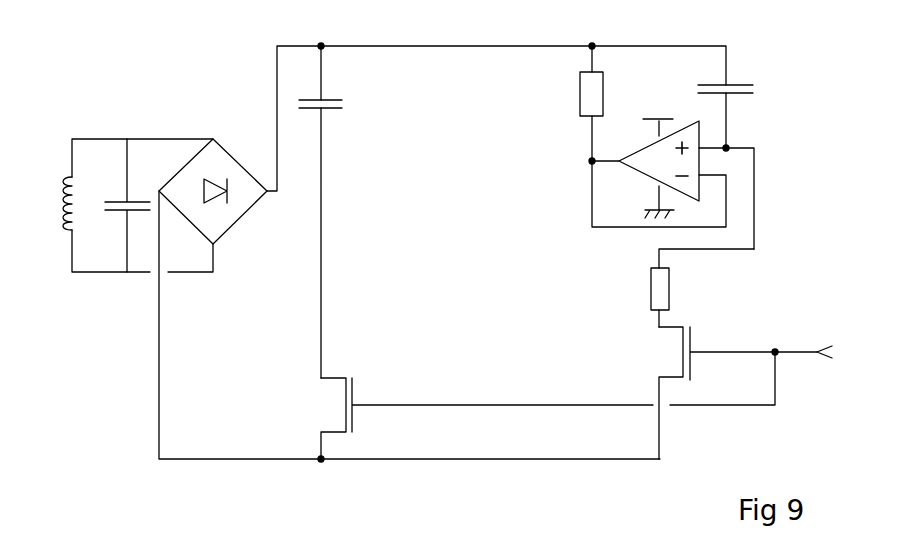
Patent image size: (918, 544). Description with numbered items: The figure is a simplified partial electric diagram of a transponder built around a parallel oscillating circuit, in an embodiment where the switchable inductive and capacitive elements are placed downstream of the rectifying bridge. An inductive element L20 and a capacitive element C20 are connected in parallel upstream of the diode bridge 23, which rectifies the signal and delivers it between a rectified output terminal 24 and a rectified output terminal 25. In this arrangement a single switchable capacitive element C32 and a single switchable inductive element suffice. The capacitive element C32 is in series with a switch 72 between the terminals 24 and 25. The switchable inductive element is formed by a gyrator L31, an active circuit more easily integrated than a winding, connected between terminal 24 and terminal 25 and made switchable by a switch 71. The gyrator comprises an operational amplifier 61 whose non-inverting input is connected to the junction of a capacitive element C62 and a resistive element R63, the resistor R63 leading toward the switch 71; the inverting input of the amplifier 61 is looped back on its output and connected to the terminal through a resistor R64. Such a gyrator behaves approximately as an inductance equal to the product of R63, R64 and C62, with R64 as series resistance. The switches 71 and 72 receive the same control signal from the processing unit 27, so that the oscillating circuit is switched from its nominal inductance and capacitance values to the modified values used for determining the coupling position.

The inductive element L20 is at (51, 214).
The capacitive element C20 is at (118, 205).
The diode bridge 23 is at (234, 160).
The rectified output terminal 24 is at (316, 30).
The switchable capacitive element C32 is at (344, 105).
The switch 72 is at (485, 418).
The rectified output terminal 25 is at (322, 461).
The gyrator L31 is at (691, 156).
The resistor R64 is at (570, 94).
The capacitive element C62 is at (734, 78).
The operational amplifier 61 is at (642, 176).
The resistive element R63 is at (702, 288).
The switch 71 is at (737, 393).
The processing unit 27 is at (816, 352).